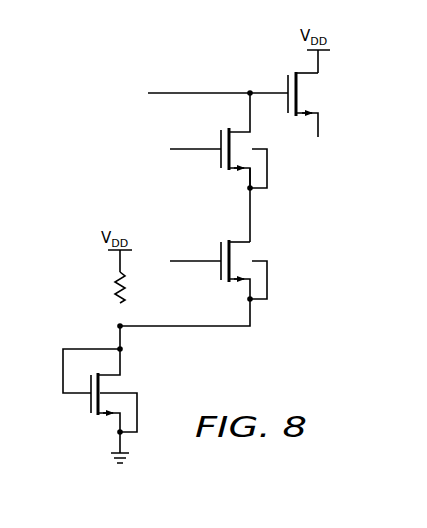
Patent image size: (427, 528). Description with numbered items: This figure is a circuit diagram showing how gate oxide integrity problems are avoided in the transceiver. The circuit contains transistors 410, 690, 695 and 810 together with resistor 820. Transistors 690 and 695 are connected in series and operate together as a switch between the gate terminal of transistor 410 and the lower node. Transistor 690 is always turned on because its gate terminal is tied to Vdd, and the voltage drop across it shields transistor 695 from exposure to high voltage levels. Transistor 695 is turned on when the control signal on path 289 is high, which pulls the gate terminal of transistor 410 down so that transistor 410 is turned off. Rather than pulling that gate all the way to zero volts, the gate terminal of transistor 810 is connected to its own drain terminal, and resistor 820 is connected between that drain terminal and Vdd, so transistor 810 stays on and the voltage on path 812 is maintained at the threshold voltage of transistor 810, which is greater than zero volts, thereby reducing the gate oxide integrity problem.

The transistor 410 is at (286, 81).
The transistor 690 is at (220, 137).
The transistor 695 is at (219, 274).
The control signal path 289 is at (200, 259).
The path 812 is at (187, 328).
The resistor 820 is at (115, 288).
The transistor 810 is at (90, 405).